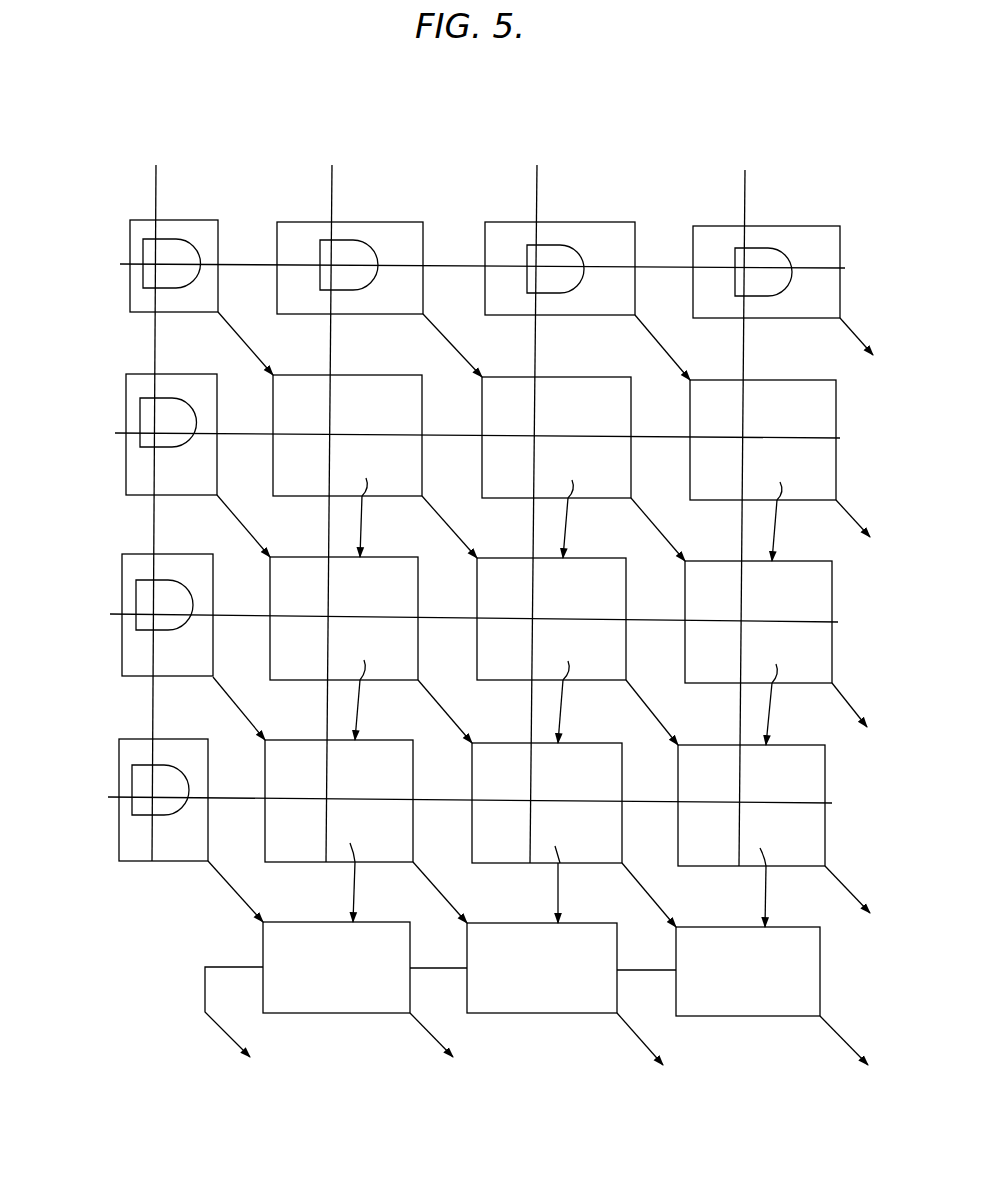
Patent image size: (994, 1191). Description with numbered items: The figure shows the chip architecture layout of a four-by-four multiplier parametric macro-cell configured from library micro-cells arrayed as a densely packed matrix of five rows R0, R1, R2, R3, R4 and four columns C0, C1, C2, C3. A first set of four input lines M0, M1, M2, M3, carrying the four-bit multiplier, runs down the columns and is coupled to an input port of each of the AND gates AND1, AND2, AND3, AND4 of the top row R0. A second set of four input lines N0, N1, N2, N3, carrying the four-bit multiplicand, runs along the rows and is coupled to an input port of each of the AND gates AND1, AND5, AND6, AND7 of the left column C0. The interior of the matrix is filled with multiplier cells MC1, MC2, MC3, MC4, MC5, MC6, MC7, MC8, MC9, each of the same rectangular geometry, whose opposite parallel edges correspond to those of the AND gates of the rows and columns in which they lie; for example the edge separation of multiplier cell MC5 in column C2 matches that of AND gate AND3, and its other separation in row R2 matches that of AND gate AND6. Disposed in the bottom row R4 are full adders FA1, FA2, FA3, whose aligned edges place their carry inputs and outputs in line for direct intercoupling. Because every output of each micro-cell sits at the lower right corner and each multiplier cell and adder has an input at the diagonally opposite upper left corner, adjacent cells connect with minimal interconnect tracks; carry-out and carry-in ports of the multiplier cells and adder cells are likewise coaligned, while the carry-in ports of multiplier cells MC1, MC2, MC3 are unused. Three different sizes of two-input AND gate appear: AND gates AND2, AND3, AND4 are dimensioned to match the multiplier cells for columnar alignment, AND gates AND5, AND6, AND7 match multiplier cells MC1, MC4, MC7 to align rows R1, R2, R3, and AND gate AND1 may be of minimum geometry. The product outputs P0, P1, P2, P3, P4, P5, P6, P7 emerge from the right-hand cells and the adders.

The AND gate AND1 is at (178, 220).
The AND gate AND2 is at (369, 222).
The AND gate AND3 is at (576, 222).
The AND gate AND4 is at (772, 226).
The AND gate AND5 is at (155, 413).
The AND gate AND6 is at (122, 557).
The AND gate AND7 is at (119, 742).
The multiplier cell MC1 is at (391, 375).
The multiplier cell MC2 is at (563, 377).
The multiplier cell MC3 is at (771, 380).
The multiplier cell MC4 is at (296, 557).
The multiplier cell MC5 is at (486, 548).
The multiplier cell MC6 is at (712, 561).
The multiplier cell MC7 is at (390, 740).
The multiplier cell MC8 is at (598, 743).
The multiplier cell MC9 is at (790, 745).
The full adder FA1 is at (721, 939).
The full adder FA2 is at (544, 937).
The full adder FA3 is at (337, 937).
The column C0 is at (157, 100).
The column C1 is at (330, 100).
The column C2 is at (542, 102).
The column C3 is at (749, 103).
The multiplier input line M0 is at (746, 506).
The multiplier input line M1 is at (540, 502).
The multiplier input line M2 is at (328, 502).
The multiplier input line M3 is at (155, 502).
The multiplicand input line N0 is at (111, 251).
The multiplicand input line N1 is at (111, 421).
The multiplicand input line N2 is at (109, 602).
The multiplicand input line N3 is at (107, 785).
The row R0 is at (497, 268).
The row R1 is at (494, 438).
The row R2 is at (490, 621).
The row R3 is at (486, 803).
The row R4 is at (847, 972).
The product bit P0 is at (860, 348).
The product bit P1 is at (859, 530).
The product bit P2 is at (854, 717).
The product bit P3 is at (848, 902).
The product bit P4 is at (848, 1054).
The product bit P5 is at (645, 1053).
The product bit P6 is at (438, 1053).
The product bit P7 is at (237, 1030).